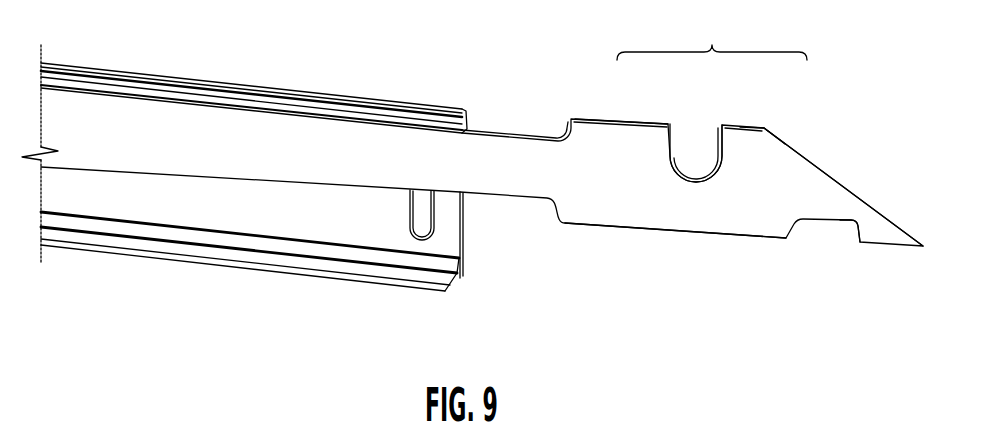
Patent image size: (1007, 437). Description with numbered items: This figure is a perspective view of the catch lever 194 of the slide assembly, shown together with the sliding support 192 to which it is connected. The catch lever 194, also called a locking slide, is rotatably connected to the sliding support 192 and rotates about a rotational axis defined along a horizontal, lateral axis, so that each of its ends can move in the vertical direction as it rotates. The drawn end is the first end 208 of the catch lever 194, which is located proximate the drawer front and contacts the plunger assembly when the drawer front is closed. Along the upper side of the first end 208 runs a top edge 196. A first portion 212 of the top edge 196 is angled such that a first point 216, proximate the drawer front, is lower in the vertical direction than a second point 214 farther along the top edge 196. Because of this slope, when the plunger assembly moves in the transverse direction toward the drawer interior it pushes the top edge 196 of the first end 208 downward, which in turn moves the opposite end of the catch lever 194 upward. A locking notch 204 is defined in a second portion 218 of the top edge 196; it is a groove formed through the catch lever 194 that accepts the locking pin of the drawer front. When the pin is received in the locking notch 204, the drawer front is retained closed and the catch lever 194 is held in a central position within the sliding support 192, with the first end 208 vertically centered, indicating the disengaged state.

The sliding support 192 is at (193, 218).
The catch lever 194 is at (410, 160).
The top edge 196 is at (712, 36).
The locking notch 204 is at (695, 162).
The first end 208 is at (641, 236).
The first portion 212 is at (805, 152).
The second point 214 is at (767, 128).
The first point 216 is at (868, 226).
The second portion 218 is at (633, 126).